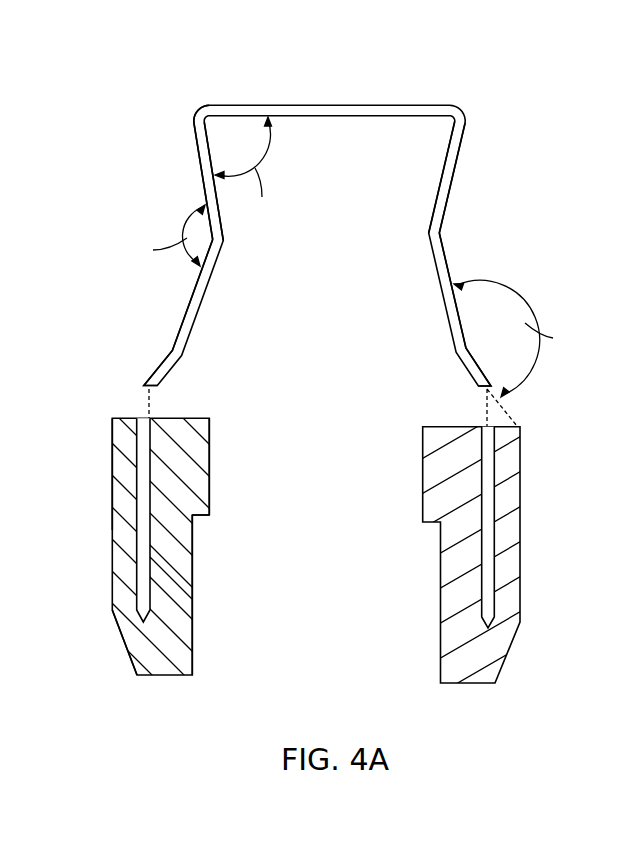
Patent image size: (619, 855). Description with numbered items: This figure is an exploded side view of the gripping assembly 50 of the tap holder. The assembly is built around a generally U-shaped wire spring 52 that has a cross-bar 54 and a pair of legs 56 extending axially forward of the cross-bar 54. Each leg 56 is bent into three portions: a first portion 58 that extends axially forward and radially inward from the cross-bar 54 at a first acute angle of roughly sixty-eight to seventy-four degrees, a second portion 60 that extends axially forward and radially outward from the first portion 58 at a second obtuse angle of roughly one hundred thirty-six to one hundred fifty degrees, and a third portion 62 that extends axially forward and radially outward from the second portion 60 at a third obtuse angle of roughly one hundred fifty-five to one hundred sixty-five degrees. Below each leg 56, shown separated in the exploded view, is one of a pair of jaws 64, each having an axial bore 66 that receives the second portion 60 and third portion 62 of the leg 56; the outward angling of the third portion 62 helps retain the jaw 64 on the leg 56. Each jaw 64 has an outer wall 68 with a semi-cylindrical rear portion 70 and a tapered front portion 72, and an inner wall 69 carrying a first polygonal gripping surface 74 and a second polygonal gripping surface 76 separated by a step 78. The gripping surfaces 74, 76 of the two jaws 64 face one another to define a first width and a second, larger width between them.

The gripping assembly 50 is at (523, 123).
The wire spring 52 is at (386, 106).
The cross-bar 54 is at (262, 106).
The leg 56 is at (198, 163).
The first portion 58 is at (202, 177).
The second portion 60 is at (201, 293).
The third portion 62 is at (174, 360).
The jaw 64 is at (133, 556).
The axial bore 66 is at (143, 425).
The outer wall 68 is at (112, 496).
The inner wall 69 is at (192, 572).
The semi-cylindrical rear portion 70 is at (112, 453).
The tapered front portion 72 is at (133, 637).
The first gripping surface 74 is at (209, 455).
The second gripping surface 76 is at (184, 598).
The step 78 is at (201, 518).